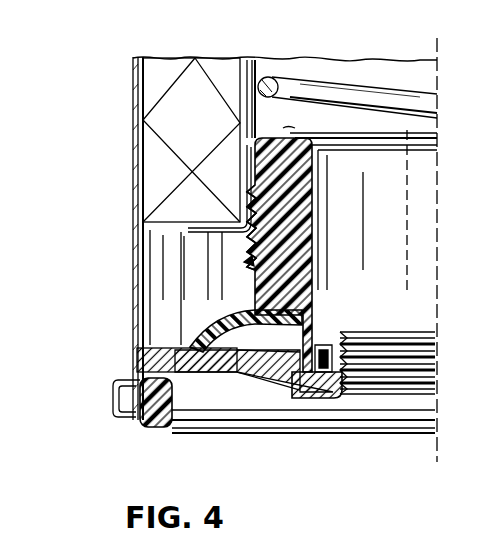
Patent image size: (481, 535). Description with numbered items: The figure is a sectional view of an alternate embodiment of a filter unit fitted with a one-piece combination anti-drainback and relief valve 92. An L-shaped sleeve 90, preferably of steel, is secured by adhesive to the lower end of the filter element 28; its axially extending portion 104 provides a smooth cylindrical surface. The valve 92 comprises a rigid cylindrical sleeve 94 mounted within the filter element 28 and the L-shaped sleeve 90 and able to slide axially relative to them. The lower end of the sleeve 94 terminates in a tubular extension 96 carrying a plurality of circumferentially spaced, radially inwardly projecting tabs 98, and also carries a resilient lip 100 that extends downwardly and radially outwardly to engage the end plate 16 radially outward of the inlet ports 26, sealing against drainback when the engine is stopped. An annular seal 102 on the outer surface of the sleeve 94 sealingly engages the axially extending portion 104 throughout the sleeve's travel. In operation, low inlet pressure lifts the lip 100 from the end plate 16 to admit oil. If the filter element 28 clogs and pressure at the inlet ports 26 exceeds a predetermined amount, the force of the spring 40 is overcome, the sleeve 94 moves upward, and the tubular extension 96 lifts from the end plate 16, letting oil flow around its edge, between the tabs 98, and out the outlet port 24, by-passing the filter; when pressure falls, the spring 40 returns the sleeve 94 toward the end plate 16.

The end plate 16 is at (145, 354).
The outlet port 24 is at (408, 332).
The inlet ports 26 is at (252, 376).
The filter element 28 is at (156, 80).
The spring 40 is at (329, 88).
The L-shaped sleeve 90 is at (192, 230).
The combination anti-drainback and relief valve 92 is at (322, 238).
The sleeve 94 is at (308, 185).
The tubular extension 96 is at (318, 342).
The tabs 98 is at (316, 400).
The resilient lip 100 is at (190, 342).
The annular seal 102 is at (240, 250).
The axially extending portion 104 is at (240, 168).